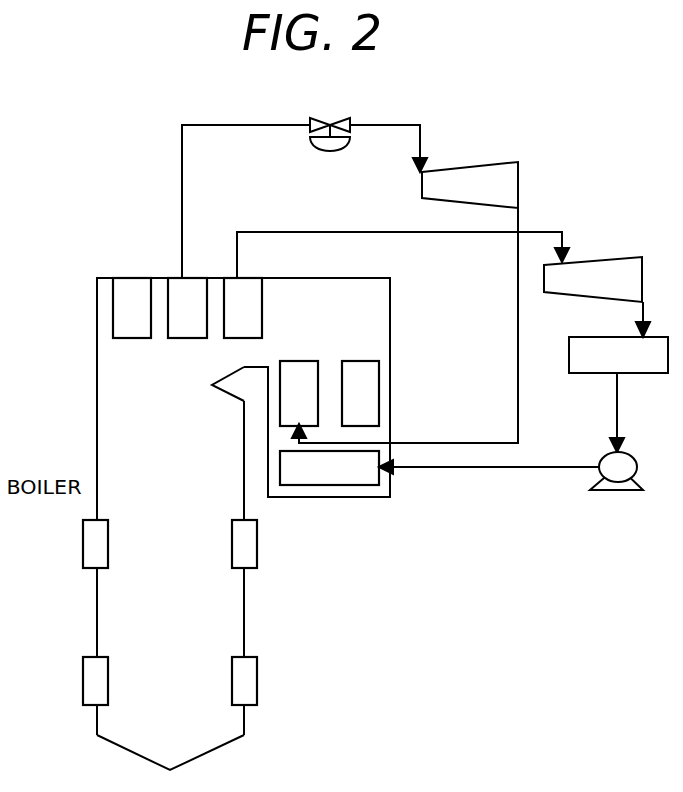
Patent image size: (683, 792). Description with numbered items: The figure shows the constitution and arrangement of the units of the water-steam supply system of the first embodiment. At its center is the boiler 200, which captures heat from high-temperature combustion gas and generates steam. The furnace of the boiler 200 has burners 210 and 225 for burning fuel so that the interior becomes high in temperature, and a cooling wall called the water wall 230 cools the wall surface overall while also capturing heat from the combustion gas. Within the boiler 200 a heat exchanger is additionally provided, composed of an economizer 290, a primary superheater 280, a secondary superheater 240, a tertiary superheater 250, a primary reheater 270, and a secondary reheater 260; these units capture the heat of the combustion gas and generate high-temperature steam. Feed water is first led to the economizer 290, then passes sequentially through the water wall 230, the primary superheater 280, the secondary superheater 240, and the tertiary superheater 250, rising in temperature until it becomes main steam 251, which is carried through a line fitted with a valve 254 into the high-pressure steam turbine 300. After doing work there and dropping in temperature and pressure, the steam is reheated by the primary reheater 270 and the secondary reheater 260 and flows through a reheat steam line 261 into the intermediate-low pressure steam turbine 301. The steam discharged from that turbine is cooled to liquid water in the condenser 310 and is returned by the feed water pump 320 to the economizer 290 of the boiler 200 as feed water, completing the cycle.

The boiler 200 is at (97, 318).
The burner 210 is at (232, 678).
The burners 225 is at (232, 543).
The water wall 230 is at (244, 460).
The secondary superheater 240 is at (133, 338).
The tertiary superheater 250 is at (188, 338).
The main steam 251 is at (182, 210).
The valve 254 is at (330, 151).
The secondary reheater 260 is at (262, 297).
The steam pipe 261 is at (257, 232).
The primary reheater 270 is at (300, 359).
The primary superheater 280 is at (359, 359).
The economizer 290 is at (330, 486).
The high-pressure steam turbine 300 is at (463, 167).
The intermediate-low pressure steam turbine 301 is at (592, 260).
The condenser 310 is at (602, 338).
The feed water pump 320 is at (602, 460).